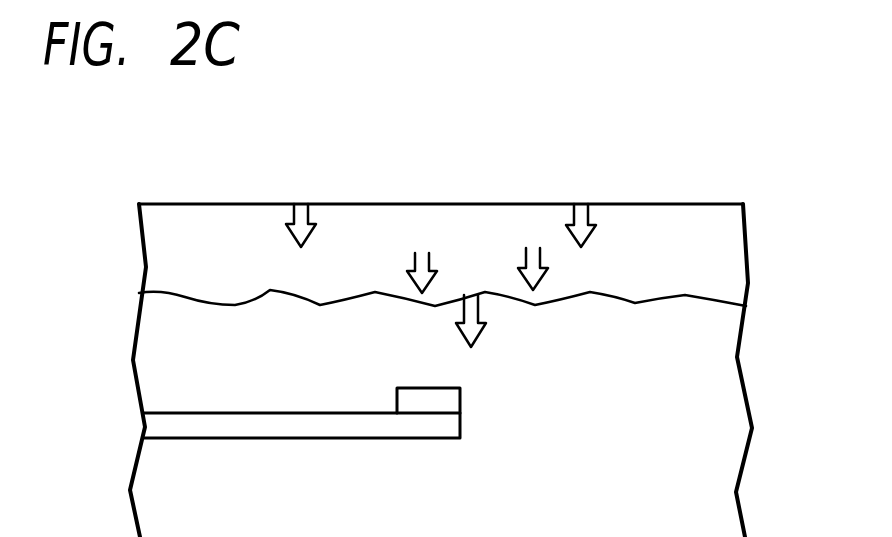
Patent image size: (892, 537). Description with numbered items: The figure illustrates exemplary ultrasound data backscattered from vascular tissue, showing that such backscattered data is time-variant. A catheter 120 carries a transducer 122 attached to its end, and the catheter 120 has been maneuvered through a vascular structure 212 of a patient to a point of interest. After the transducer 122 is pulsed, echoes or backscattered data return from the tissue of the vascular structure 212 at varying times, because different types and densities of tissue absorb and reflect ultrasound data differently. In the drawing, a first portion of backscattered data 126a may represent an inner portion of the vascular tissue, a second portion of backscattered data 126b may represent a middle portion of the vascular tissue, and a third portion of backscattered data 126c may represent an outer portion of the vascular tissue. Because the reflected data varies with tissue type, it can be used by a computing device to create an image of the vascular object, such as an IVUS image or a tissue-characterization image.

The catheter 120 is at (438, 438).
The transducer 122 is at (460, 400).
The first portion of backscattered data 126a is at (495, 323).
The second portion of backscattered data 126b is at (560, 267).
The third portion of backscattered data 126c is at (617, 227).
The vascular structure 212 is at (440, 203).